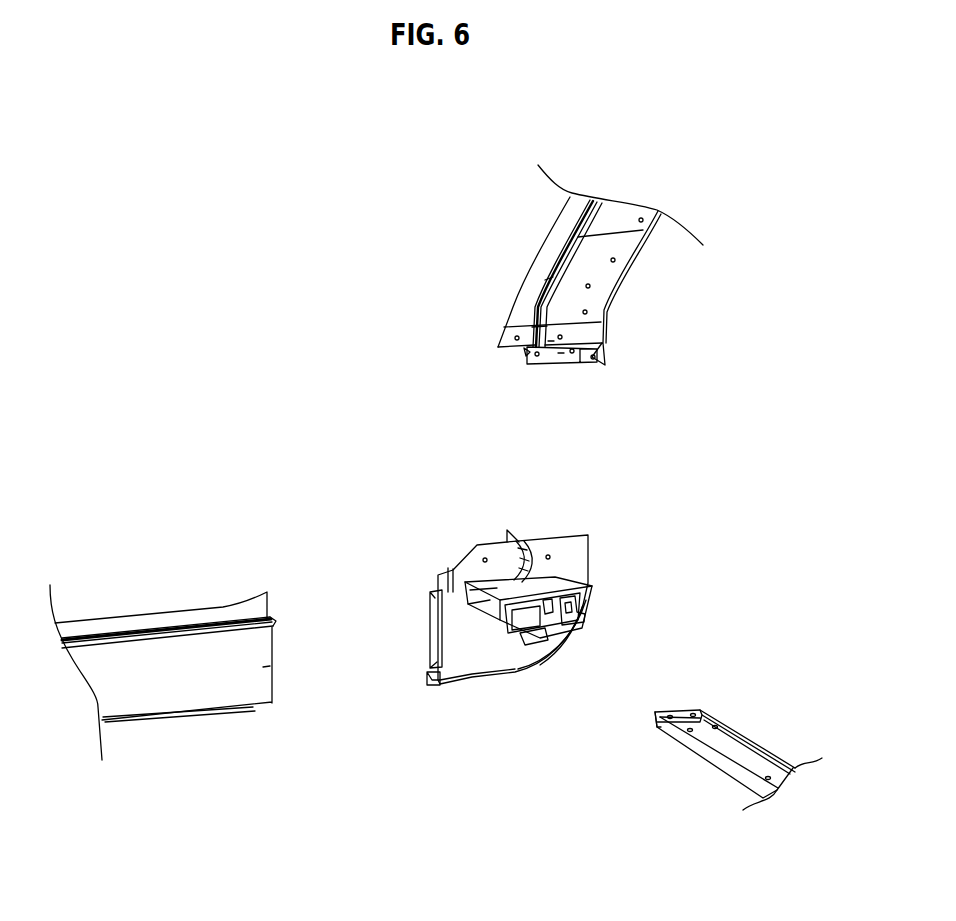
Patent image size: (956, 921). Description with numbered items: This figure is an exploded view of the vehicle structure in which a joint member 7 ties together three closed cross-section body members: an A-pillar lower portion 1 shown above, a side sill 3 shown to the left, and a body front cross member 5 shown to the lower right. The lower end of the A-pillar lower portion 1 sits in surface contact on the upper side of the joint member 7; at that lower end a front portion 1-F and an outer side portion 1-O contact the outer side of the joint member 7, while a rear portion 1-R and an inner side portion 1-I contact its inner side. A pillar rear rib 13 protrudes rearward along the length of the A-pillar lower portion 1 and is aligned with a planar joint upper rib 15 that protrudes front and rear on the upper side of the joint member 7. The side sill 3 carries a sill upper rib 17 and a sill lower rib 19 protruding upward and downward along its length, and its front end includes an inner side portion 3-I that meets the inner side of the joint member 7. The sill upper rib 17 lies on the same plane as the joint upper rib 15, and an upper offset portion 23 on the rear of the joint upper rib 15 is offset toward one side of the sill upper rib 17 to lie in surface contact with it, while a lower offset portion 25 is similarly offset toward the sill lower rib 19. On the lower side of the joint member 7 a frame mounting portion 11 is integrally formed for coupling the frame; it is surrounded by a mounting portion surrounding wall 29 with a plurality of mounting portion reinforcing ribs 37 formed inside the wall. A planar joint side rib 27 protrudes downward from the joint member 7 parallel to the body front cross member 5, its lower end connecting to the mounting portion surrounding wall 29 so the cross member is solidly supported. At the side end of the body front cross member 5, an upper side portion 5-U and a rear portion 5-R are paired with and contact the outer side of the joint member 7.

The A-pillar lower portion 1 is at (618, 243).
The pillar rear rib 13 is at (542, 257).
The front portion 1-F is at (605, 360).
The rear portion 1-R is at (527, 352).
The inner side portion 1-I is at (551, 343).
The outer side portion 1-O is at (561, 354).
The joint upper rib 15 is at (498, 552).
The upper offset portion 23 is at (443, 577).
The lower offset portion 25 is at (433, 686).
The frame mounting portion 11 is at (570, 630).
The mounting portion surrounding wall 29 is at (560, 618).
The mounting portion reinforcing ribs 37 is at (545, 607).
The joint member 7 is at (545, 648).
The joint side rib 27 is at (543, 637).
The side sill 3 is at (150, 703).
The sill upper rib 17 is at (238, 613).
The sill lower rib 19 is at (243, 710).
The inner side portion of sill 3-I is at (270, 667).
The body front cross member 5 is at (713, 763).
The upper side portion 5-U is at (682, 713).
The rear portion 5-R is at (657, 727).